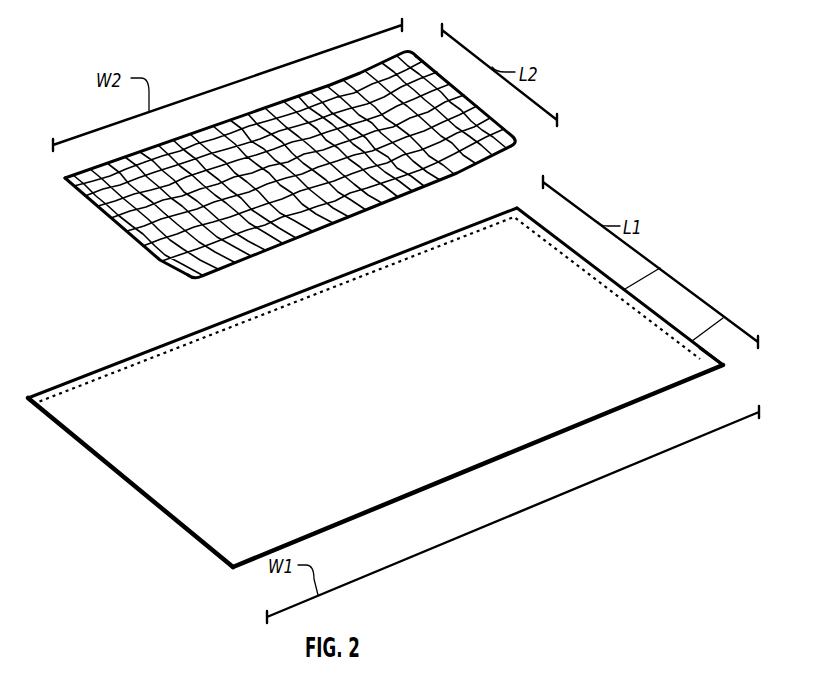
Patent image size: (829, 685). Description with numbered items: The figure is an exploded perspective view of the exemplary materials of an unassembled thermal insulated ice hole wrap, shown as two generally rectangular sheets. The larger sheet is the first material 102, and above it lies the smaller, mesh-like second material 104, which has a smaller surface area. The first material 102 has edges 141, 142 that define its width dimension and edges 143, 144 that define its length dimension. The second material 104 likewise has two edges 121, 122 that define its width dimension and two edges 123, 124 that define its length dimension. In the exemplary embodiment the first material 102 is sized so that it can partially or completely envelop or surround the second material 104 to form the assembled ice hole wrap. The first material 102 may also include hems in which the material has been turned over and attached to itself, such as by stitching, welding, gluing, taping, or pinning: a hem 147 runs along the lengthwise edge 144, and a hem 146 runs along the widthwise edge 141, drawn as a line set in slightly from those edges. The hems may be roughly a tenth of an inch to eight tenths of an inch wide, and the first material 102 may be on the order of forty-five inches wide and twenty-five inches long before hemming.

The first material 102 is at (406, 387).
The second material 104 is at (328, 166).
The edge 121 is at (284, 98).
The edge 122 is at (490, 165).
The edge 123 is at (158, 268).
The edge 124 is at (553, 118).
The edge 141 is at (140, 352).
The edge 142 is at (450, 477).
The edge 143 is at (141, 493).
The edge 144 is at (660, 268).
The hem 146 is at (199, 338).
The hem 147 is at (723, 318).